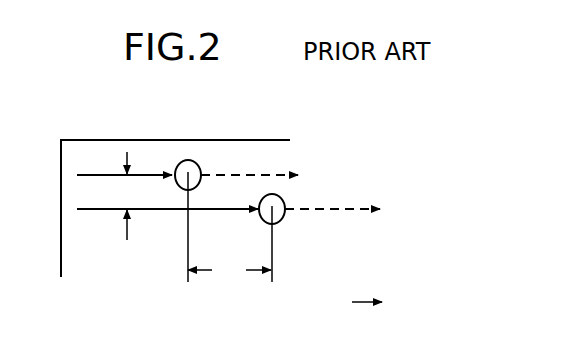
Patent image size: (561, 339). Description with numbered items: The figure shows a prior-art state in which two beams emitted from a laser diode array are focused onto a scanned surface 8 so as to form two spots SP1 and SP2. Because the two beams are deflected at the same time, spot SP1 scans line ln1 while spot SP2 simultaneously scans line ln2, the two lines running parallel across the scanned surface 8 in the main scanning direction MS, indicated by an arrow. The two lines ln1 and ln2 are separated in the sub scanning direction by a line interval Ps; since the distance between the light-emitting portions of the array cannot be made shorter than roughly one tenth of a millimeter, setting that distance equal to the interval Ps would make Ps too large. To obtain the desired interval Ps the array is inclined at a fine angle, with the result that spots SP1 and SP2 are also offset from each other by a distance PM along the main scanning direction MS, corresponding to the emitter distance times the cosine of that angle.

The scanned surface 8 is at (97, 148).
The spot SP1 is at (199, 164).
The spot SP2 is at (282, 198).
The line ln1 is at (217, 176).
The line ln2 is at (259, 211).
The line interval PS is at (126, 196).
The spot distance in main scanning direction PM is at (229, 270).
The main scanning direction MS is at (383, 302).